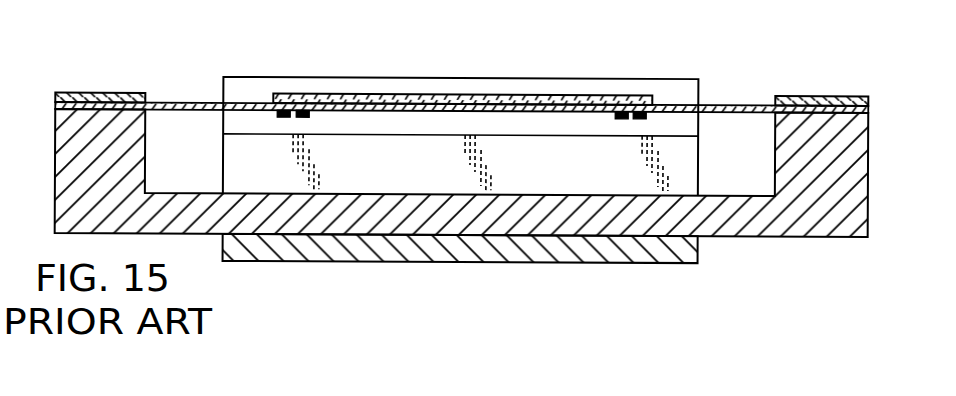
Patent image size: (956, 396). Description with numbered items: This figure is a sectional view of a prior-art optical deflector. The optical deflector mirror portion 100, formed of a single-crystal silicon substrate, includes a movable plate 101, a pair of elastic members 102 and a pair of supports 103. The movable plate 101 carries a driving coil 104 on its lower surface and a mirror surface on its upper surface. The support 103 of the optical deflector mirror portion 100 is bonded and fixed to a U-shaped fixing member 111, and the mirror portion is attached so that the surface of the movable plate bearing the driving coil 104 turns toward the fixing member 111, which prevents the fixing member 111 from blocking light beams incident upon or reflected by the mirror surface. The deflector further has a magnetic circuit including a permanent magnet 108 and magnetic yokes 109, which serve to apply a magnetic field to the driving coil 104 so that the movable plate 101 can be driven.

The optical deflector mirror portion 100 is at (668, 66).
The movable plate 101 is at (413, 95).
The elastic members 102 is at (185, 104).
The supports 103 is at (100, 94).
The driving coil 104 is at (302, 111).
The permanent magnet 108 is at (518, 120).
The magnetic yoke 109 is at (422, 263).
The fixing member 111 is at (775, 235).